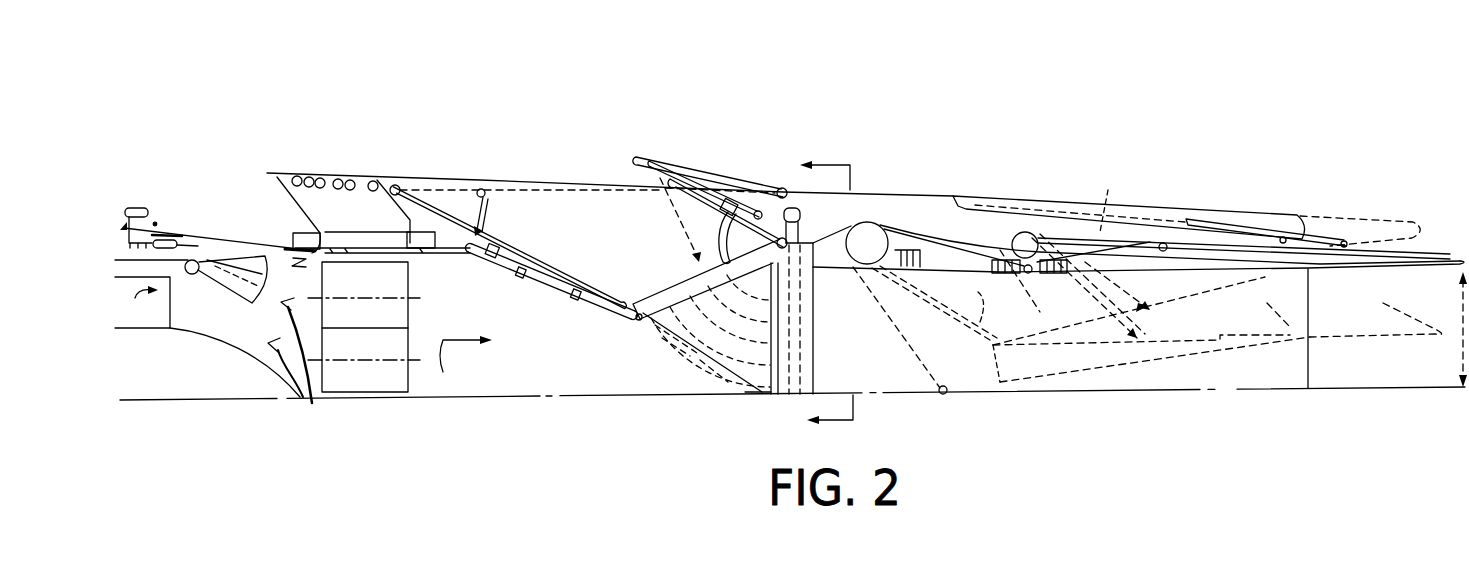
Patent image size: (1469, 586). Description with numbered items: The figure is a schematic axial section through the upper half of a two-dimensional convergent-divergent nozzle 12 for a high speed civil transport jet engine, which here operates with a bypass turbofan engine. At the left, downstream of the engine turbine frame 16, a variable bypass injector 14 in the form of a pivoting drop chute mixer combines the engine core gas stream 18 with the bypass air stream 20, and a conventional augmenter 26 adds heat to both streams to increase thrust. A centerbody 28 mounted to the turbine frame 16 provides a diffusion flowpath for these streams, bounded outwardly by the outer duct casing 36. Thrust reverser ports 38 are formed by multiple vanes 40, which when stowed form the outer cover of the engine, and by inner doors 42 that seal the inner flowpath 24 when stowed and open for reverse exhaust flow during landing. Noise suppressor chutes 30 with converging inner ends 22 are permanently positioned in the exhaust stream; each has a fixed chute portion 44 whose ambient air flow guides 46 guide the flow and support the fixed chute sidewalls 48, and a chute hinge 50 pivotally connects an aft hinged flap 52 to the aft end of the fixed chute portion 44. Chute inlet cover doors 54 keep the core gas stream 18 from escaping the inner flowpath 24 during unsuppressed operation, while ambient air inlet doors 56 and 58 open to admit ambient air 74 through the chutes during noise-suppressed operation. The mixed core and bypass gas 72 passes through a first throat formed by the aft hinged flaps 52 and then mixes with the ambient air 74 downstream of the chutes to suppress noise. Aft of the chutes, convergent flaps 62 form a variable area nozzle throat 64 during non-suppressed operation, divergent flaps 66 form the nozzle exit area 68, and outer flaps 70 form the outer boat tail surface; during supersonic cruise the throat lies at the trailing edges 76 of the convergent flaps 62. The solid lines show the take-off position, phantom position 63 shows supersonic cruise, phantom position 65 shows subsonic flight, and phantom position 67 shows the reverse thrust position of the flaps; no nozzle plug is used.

The two-dimensional convergent-divergent nozzle 12 is at (832, 90).
The variable bypass injector 14 is at (240, 262).
The engine turbine frame 16 is at (150, 327).
The engine core gas stream 18 is at (166, 296).
The bypass air stream 20 is at (173, 231).
The converging inner ends 22 is at (762, 391).
The inner flowpath 24 is at (540, 327).
The augmenter 26 is at (303, 368).
The centerbody 28 is at (232, 390).
The noise suppressor chutes 30 is at (707, 357).
The outer duct casing 36 is at (398, 180).
The thrust reverser ports 38 is at (311, 177).
The vanes 40 is at (364, 181).
The inner doors 42 is at (405, 252).
The fixed chute portion 44 is at (733, 357).
The ambient air flow guides 46 is at (677, 340).
The fixed chute sidewalls 48 is at (710, 313).
The chute hinge 50 is at (800, 300).
The aft hinged flap 52 is at (815, 338).
The chute inlet cover doors 54 is at (690, 202).
The ambient air inlet door 56 is at (527, 193).
The ambient air inlet door 58 is at (705, 146).
The convergent flaps 62 is at (978, 300).
The phantom position 63 is at (1360, 214).
The variable area nozzle throat 64 is at (990, 376).
The phantom position 65 is at (1383, 302).
The divergent flaps 66 is at (1281, 268).
The phantom position 67 is at (1070, 372).
The nozzle exit area 68 is at (1463, 340).
The outer flaps 70 is at (1147, 212).
The core and bypass gas 72 is at (466, 363).
The ambient air 74 is at (538, 154).
The trailing edges 76 is at (1028, 273).